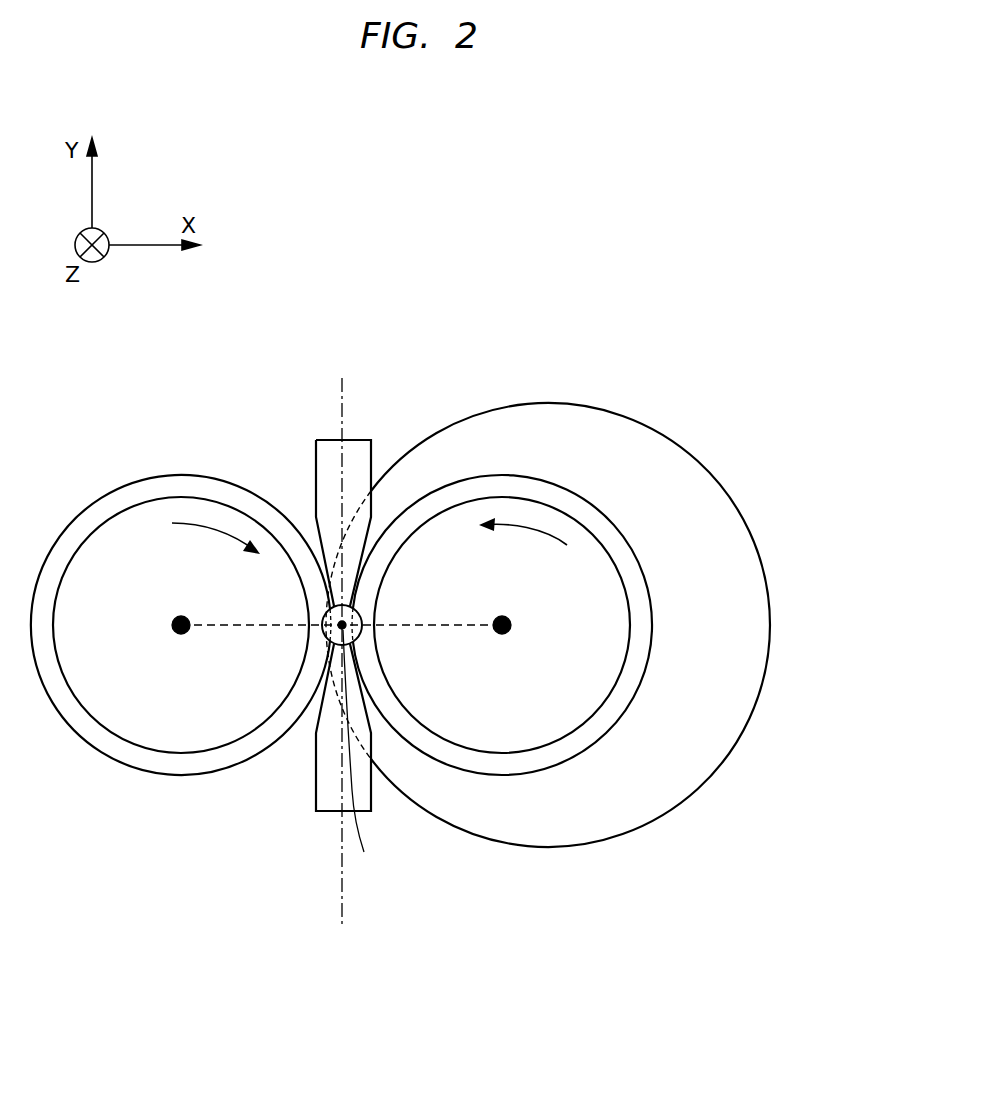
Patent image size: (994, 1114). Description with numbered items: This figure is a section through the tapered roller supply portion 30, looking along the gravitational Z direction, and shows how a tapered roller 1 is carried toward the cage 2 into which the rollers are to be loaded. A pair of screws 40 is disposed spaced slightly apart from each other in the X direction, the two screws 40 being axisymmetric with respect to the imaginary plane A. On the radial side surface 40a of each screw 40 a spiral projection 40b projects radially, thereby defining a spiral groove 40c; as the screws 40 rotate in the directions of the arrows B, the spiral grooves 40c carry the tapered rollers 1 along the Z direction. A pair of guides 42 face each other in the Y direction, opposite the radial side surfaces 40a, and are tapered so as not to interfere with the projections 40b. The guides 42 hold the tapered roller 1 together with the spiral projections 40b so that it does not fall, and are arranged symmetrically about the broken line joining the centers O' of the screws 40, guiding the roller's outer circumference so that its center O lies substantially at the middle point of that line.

The tapered roller supply portion 30 is at (597, 342).
The cage 2 is at (693, 490).
The screw 40 is at (442, 697).
The radial side surface 40a is at (630, 640).
The spiral projection 40b is at (618, 697).
The spiral groove 40c is at (580, 727).
The guide 42 is at (325, 497).
The tapered roller 1 is at (344, 626).